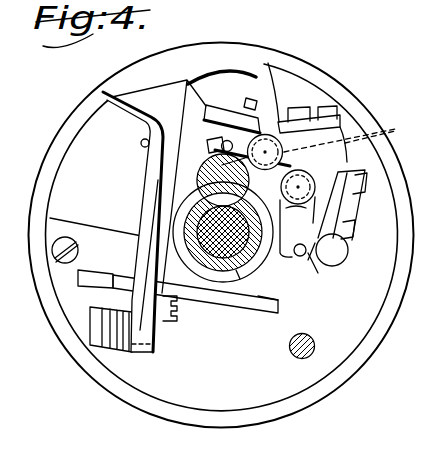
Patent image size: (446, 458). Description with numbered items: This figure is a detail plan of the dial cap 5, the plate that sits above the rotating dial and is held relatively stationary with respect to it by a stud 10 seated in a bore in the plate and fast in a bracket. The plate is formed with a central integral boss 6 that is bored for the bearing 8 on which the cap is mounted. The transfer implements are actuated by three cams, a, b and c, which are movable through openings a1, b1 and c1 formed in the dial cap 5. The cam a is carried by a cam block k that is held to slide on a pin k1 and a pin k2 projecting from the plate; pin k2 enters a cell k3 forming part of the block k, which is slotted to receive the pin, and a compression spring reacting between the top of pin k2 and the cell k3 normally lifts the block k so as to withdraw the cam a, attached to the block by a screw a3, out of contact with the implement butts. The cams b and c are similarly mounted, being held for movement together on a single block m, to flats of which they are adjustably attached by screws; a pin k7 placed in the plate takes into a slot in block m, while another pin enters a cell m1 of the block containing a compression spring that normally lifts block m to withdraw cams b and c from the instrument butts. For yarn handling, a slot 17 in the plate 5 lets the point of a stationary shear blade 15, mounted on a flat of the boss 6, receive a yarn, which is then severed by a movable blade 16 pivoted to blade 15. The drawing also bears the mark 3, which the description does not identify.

The hub / shaft 3 is at (200, 219).
The dial cap 5 is at (326, 365).
The central integral boss 6 is at (202, 284).
The bearing 8 is at (243, 283).
The stud 10 is at (328, 332).
The stationary shear blade 15 is at (129, 265).
The movable blade 16 is at (234, 316).
The slot 17 is at (87, 284).
The cam a is at (128, 186).
The opening a1 is at (217, 45).
The screw a3 is at (252, 98).
The cam b is at (340, 124).
The opening b1 is at (270, 124).
The cam c is at (372, 203).
The opening c1 is at (342, 258).
The cam block k is at (256, 158).
The pin k1 is at (216, 169).
The pin k2 is at (382, 131).
The cell k3 is at (312, 160).
The pin k7 is at (270, 286).
The block m is at (308, 251).
The cell m1 is at (295, 220).